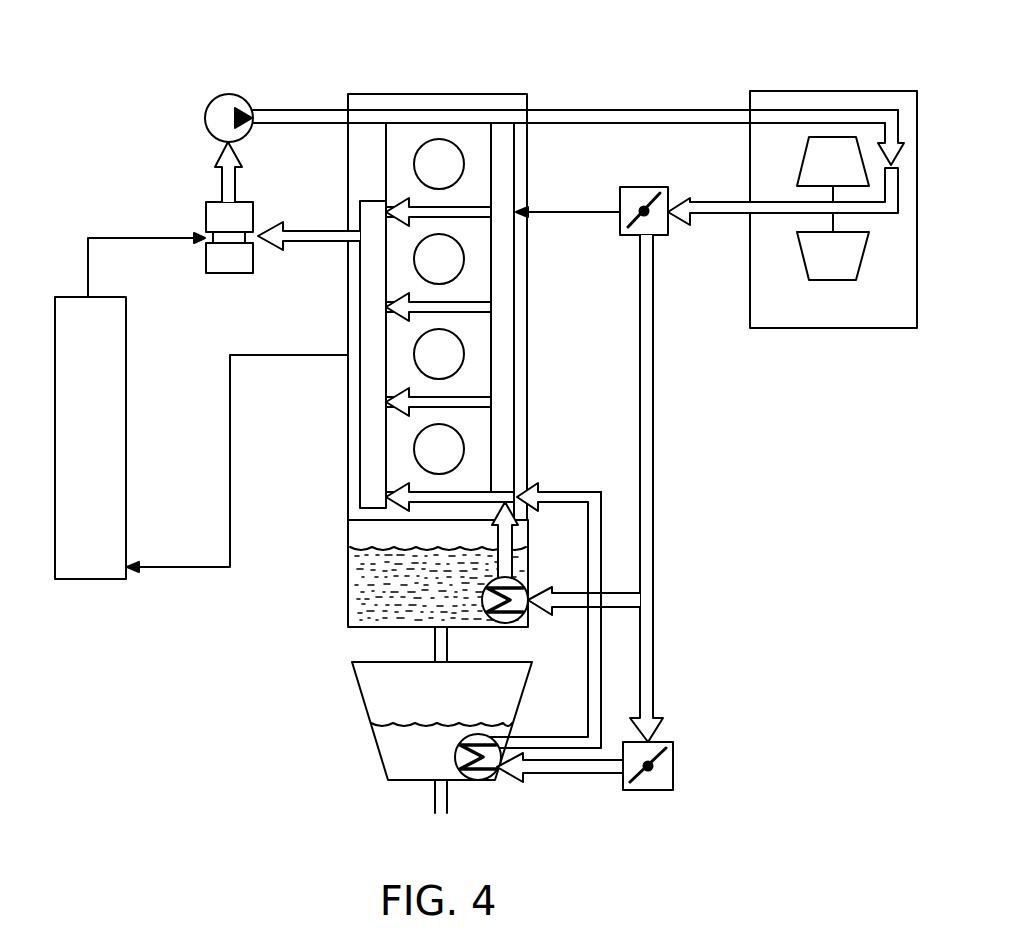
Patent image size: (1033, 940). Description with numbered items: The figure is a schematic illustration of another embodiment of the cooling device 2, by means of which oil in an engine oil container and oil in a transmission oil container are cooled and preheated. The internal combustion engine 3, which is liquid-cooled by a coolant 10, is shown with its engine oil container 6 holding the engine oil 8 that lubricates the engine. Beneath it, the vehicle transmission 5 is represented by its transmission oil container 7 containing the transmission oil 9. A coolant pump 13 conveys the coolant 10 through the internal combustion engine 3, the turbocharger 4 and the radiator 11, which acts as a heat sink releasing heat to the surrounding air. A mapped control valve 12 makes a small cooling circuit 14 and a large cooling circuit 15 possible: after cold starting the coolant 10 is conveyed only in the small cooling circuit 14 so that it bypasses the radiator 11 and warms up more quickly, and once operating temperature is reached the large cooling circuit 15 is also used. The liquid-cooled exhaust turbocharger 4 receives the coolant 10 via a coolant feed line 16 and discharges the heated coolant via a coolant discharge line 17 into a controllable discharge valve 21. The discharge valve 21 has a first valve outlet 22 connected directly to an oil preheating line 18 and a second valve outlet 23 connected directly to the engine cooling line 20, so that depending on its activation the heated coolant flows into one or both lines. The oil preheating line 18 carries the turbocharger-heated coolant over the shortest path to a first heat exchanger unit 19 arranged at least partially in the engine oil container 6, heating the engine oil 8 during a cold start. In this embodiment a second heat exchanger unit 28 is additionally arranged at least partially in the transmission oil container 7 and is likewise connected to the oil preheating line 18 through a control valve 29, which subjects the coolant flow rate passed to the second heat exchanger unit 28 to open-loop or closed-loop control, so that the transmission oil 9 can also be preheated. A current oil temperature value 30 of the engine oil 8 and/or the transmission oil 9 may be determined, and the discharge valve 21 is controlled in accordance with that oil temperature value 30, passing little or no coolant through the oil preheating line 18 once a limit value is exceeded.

The cooling device 2 is at (767, 520).
The internal combustion engine 3 is at (416, 89).
The turbocharger 4 is at (870, 86).
The vehicle transmission 5 is at (405, 794).
The engine oil container 6 is at (352, 535).
The transmission oil container 7 is at (370, 693).
The engine oil 8 is at (348, 600).
The transmission oil 9 is at (392, 762).
The coolant 10 is at (300, 108).
The radiator 11 is at (76, 454).
The mapped control valve 12 is at (227, 275).
The coolant pump 13 is at (213, 98).
The small cooling circuit 14 is at (313, 222).
The large cooling circuit 15 is at (145, 234).
The coolant feed line 16 is at (637, 108).
The coolant discharge line 17 is at (708, 200).
The oil preheating line 18 is at (659, 479).
The first heat exchanger unit 19 is at (521, 577).
The engine cooling line 20 is at (573, 205).
The discharge valve 21 is at (635, 236).
The first valve outlet 22 is at (653, 236).
The second valve outlet 23 is at (617, 214).
The second heat exchanger unit 28 is at (482, 728).
The control valve 29 is at (675, 768).
The oil temperature value 30 is at (346, 578).